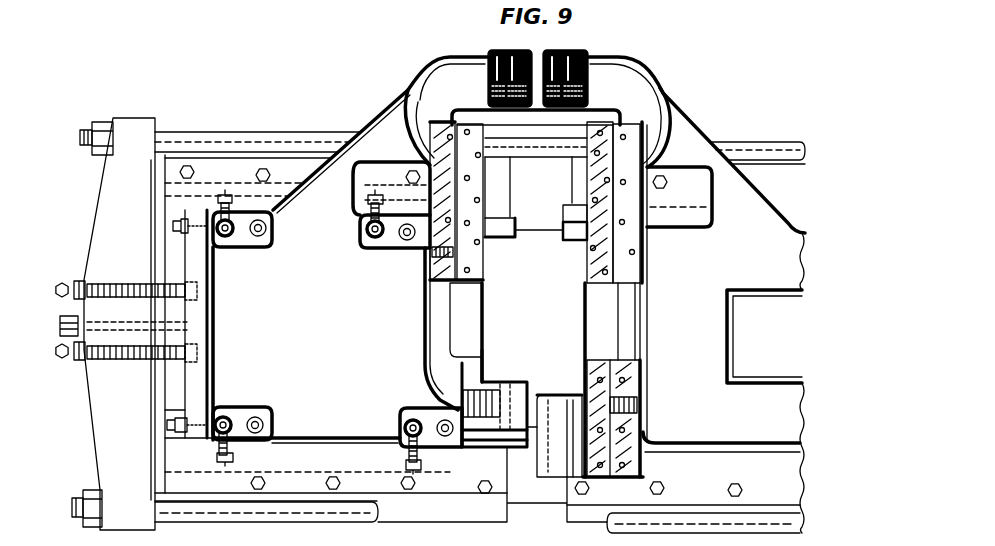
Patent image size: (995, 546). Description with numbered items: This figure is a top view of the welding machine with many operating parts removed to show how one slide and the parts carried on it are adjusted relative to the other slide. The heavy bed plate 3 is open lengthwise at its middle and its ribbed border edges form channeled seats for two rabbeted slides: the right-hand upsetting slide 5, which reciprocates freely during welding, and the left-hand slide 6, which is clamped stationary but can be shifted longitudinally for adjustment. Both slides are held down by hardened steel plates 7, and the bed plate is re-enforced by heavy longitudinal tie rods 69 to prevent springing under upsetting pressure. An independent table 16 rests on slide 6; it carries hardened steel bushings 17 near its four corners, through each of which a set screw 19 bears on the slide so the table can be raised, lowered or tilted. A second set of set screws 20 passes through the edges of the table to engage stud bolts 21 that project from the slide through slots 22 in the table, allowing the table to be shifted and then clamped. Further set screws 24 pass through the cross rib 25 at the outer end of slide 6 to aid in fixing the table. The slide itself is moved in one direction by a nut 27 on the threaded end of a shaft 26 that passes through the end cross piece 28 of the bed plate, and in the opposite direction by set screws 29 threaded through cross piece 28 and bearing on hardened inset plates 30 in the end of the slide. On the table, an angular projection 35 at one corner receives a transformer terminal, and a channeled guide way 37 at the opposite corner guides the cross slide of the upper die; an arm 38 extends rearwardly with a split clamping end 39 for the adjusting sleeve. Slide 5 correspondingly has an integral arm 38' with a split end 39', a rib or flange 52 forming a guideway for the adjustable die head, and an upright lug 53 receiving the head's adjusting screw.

The bed plate 3 is at (416, 512).
The slide 5 is at (723, 350).
The slide 6 is at (205, 310).
The hardened steel plates 7 is at (448, 329).
The table 16 is at (335, 345).
The hardened steel bushings 17 is at (392, 246).
The set screw 19 is at (270, 228).
The set screws 20 is at (233, 201).
The stud bolts 21 is at (228, 241).
The slots 22 is at (413, 412).
The set screws 24 is at (173, 228).
The cross rib 25 is at (192, 258).
The shaft 26 is at (188, 324).
The nut 27 is at (58, 325).
The end cross piece 28 is at (113, 324).
The set screws 29 is at (55, 290).
The hardened inset plates 30 is at (198, 291).
The angular projection 35 is at (523, 377).
The channeled guide way 37 is at (479, 265).
The arm 38 is at (446, 135).
The arm 38' is at (696, 145).
The split clamping end 39 is at (496, 70).
The split end 39' is at (579, 71).
The rib or flange 52 is at (637, 380).
The upright lug 53 is at (549, 477).
The tie rods 69 is at (263, 136).